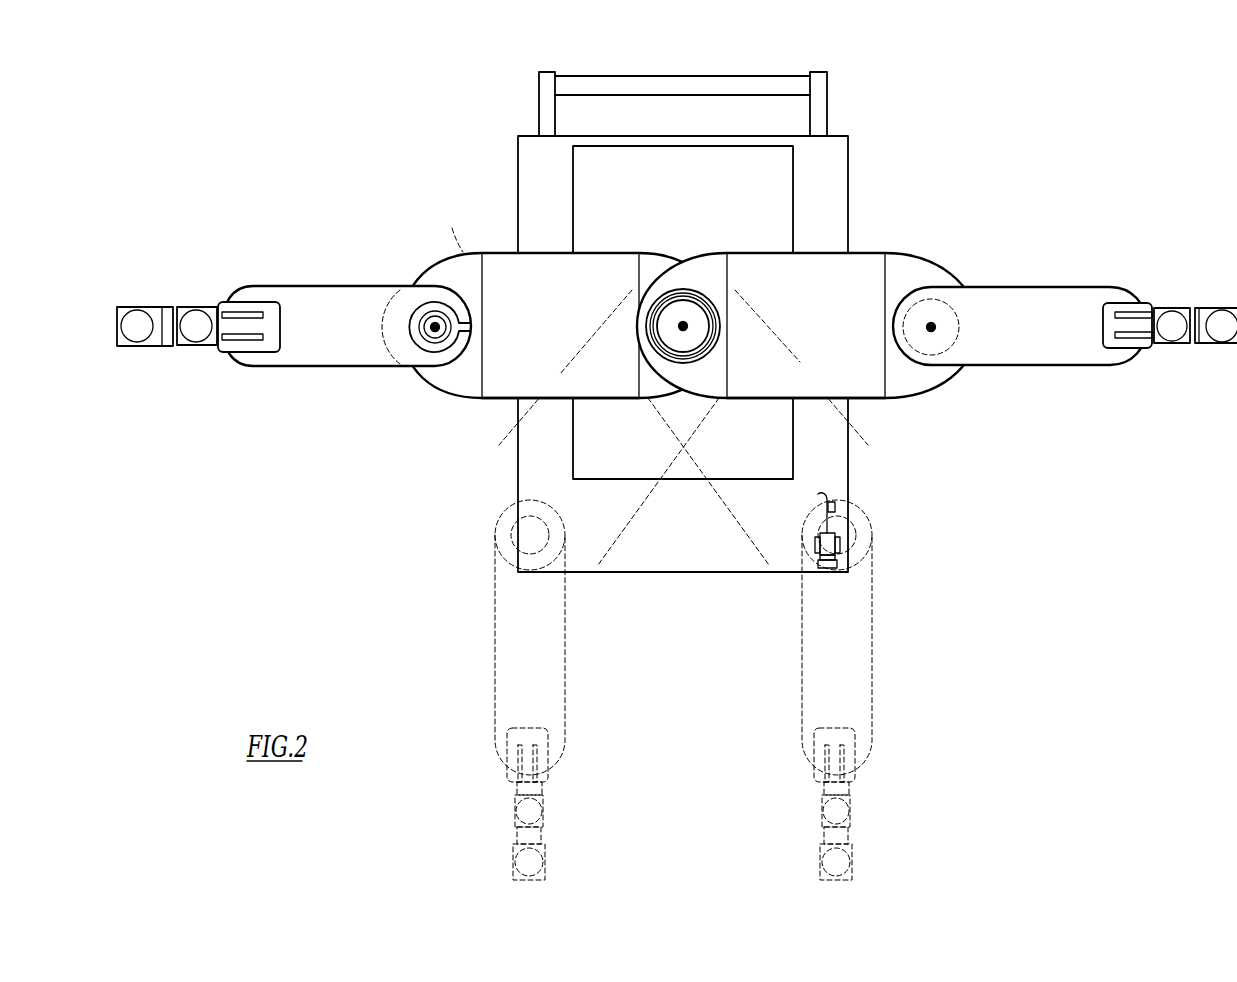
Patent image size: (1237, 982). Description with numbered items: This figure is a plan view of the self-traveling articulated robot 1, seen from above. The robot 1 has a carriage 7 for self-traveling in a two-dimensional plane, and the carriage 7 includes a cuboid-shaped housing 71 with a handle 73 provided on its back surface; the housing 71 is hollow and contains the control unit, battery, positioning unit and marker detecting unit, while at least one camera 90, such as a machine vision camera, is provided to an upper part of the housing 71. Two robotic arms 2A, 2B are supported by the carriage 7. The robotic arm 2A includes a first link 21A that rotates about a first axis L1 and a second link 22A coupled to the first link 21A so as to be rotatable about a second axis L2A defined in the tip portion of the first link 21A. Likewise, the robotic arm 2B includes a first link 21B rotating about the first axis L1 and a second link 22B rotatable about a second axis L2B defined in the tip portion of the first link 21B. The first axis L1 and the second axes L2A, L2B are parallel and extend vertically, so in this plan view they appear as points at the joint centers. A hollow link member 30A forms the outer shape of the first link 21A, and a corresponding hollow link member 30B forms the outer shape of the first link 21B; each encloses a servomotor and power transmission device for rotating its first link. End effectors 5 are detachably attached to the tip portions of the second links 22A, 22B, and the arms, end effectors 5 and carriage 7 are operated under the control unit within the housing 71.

The self-traveling articulated robot 1 is at (965, 142).
The robotic arm 2A is at (359, 397).
The robotic arm 2B is at (1049, 211).
The end effector 5 is at (165, 358).
The carriage 7 is at (848, 212).
The housing 71 is at (848, 168).
The handle 73 is at (828, 104).
The first link 21A is at (497, 398).
The first link 21B is at (867, 398).
The second link 22A is at (310, 367).
The second link 22B is at (1057, 366).
The hollow link member 30A is at (463, 252).
The hollow link member 30B is at (913, 395).
The first axis L1 is at (683, 326).
The second axis L2A is at (435, 330).
The second axis L2B is at (933, 325).
The camera 90 is at (842, 563).